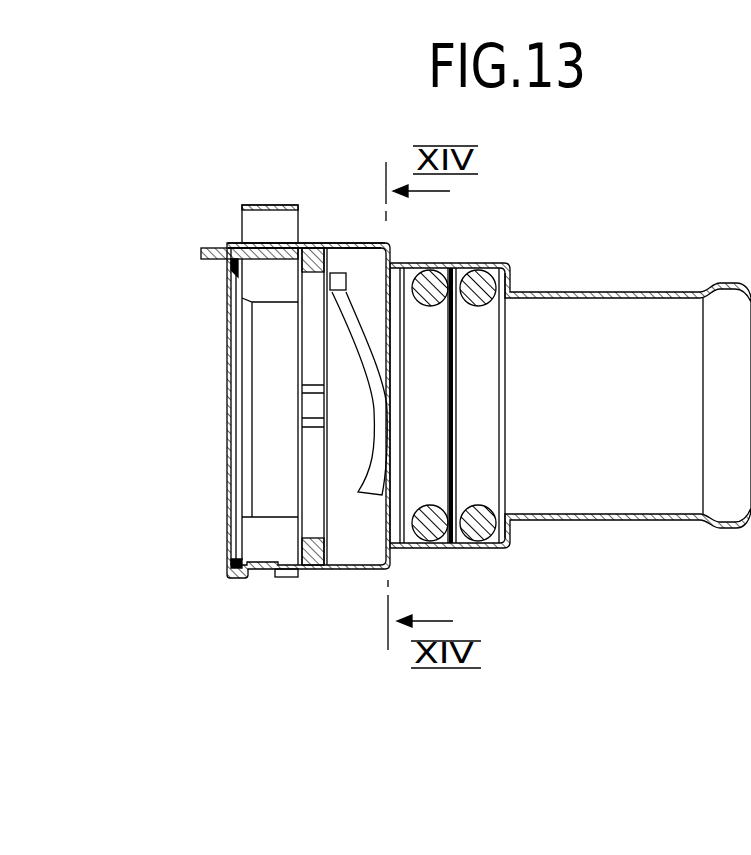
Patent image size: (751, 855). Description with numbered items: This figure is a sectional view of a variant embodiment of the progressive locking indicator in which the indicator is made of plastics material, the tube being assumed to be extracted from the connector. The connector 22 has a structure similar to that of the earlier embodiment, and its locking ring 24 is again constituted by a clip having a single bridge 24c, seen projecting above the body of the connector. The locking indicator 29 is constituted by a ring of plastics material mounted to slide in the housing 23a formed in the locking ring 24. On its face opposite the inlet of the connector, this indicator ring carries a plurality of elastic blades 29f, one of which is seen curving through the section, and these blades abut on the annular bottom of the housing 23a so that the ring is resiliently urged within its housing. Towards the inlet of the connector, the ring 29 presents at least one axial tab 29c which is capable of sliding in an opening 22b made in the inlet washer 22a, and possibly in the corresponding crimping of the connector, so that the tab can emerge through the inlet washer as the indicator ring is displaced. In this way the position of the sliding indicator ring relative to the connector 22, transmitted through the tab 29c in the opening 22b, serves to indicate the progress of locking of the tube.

The connector 22 is at (470, 252).
The inlet washer 22a is at (235, 272).
The opening 22b is at (215, 234).
The housing 23a is at (360, 258).
The locking ring 24 is at (268, 398).
The bridge 24c is at (273, 205).
The locking indicator 29 is at (315, 488).
The axial tab 29c is at (212, 258).
The elastic blades 29f is at (380, 437).